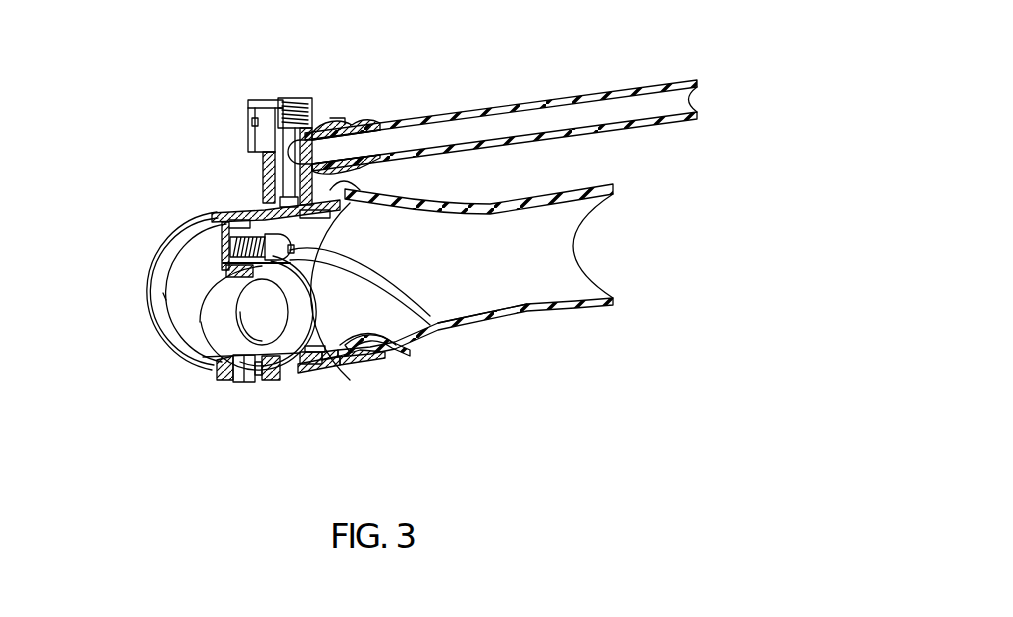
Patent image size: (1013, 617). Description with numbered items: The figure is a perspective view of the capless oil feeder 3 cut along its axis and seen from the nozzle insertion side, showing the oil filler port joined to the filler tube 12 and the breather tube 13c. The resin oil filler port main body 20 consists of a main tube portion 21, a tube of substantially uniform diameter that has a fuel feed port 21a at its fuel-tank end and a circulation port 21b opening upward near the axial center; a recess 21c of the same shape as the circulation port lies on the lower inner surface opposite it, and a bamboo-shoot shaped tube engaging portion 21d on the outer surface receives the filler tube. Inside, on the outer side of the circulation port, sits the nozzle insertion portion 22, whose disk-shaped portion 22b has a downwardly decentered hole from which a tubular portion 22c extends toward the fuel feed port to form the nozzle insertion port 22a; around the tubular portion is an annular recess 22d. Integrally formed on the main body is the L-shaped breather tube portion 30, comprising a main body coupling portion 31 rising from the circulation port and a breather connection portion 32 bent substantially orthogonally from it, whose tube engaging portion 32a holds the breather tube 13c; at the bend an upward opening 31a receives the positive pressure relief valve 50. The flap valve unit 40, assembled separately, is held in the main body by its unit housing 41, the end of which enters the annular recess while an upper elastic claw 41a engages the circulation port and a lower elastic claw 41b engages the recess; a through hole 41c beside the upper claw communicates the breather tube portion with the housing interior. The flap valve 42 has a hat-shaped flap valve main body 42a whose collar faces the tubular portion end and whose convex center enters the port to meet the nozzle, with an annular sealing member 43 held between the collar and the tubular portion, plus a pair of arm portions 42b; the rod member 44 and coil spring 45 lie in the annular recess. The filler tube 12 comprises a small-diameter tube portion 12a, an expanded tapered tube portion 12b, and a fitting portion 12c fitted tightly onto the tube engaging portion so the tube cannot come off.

The capless oil feeder 3 is at (516, 54).
The filler tube 12 is at (597, 306).
The small-diameter tube portion 12a is at (540, 315).
The tapered tube portion 12b is at (476, 328).
The fitting portion 12c is at (334, 366).
The breather tube 13c is at (547, 98).
The oil filler port main body 20 is at (162, 227).
The main tube portion 21 is at (255, 210).
The fuel feed port 21a is at (300, 213).
The circulation port 21b is at (277, 202).
The recess 21c is at (292, 374).
The tube engaging portion 21d is at (358, 365).
The nozzle insertion portion 22 is at (190, 257).
The nozzle insertion port 22a is at (233, 290).
The disk-shaped portion 22b is at (190, 268).
The tubular portion 22c is at (233, 309).
The annular recess 22d is at (243, 275).
The breather tube portion 30 is at (372, 145).
The main body coupling portion 31 is at (268, 162).
The opening 31a is at (270, 100).
The breather connection portion 32 is at (328, 130).
The tube engaging portion 32a is at (352, 126).
The flap valve unit 40 is at (370, 356).
The unit housing 41 is at (320, 366).
The elastic claw 41a is at (296, 142).
The elastic claw 41b is at (318, 360).
The through hole 41c is at (280, 112).
The flap valve 42 is at (236, 307).
The flap valve main body 42a is at (245, 350).
The arm portions 42b is at (430, 322).
The sealing member 43 is at (278, 358).
The rod member 44 is at (317, 217).
The coil spring 45 is at (243, 238).
The positive pressure relief valve 50 is at (249, 97).